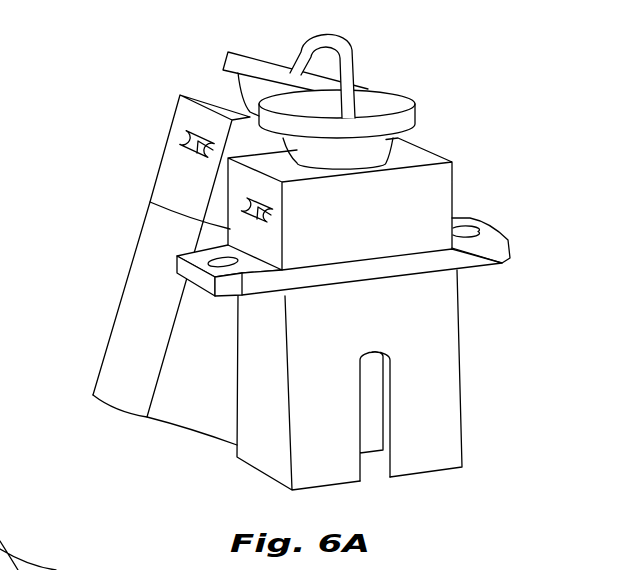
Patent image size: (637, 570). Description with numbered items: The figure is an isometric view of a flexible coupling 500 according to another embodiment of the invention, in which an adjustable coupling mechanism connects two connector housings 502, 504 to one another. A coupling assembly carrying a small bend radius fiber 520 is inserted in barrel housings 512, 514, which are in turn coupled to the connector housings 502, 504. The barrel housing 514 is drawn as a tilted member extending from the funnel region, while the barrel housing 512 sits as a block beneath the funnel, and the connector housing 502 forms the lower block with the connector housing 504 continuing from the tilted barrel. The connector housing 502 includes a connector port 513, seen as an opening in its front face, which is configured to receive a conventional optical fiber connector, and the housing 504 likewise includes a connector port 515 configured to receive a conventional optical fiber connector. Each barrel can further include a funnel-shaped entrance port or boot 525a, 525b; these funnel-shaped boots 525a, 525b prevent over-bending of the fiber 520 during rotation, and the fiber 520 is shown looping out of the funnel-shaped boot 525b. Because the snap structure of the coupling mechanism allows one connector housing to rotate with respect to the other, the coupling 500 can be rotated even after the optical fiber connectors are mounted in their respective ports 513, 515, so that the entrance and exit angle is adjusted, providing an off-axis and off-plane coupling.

The flexible coupling 500 is at (132, 78).
The connector housing 502 is at (438, 385).
The connector housing 504 is at (138, 302).
The barrel housing 512 is at (440, 192).
The connector port 513 is at (372, 462).
The barrel housing 514 is at (170, 173).
The connector port 515 is at (180, 428).
The small bend radius fiber 520 is at (352, 52).
The funnel-shaped entrance port or boot 525a is at (259, 59).
The funnel-shaped entrance port or boot 525b is at (398, 102).